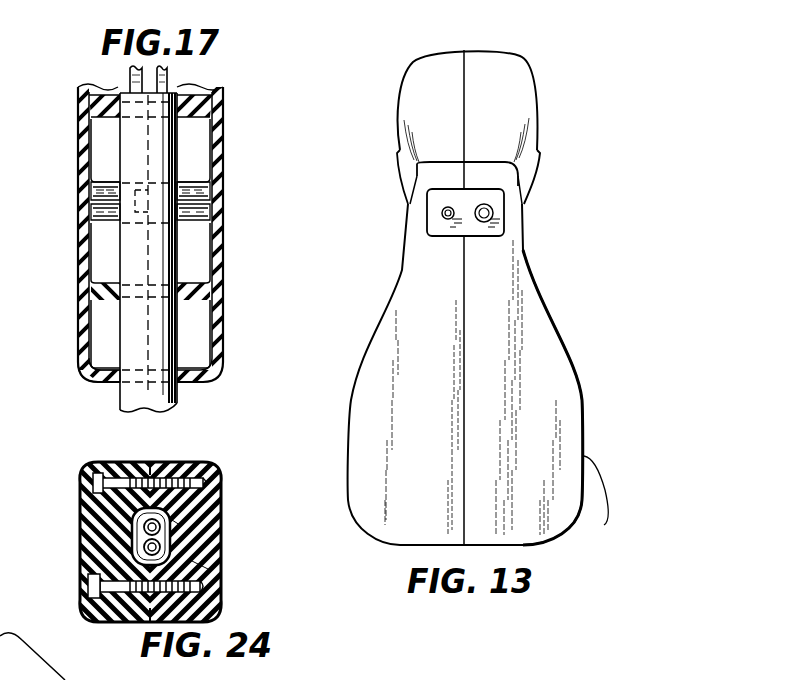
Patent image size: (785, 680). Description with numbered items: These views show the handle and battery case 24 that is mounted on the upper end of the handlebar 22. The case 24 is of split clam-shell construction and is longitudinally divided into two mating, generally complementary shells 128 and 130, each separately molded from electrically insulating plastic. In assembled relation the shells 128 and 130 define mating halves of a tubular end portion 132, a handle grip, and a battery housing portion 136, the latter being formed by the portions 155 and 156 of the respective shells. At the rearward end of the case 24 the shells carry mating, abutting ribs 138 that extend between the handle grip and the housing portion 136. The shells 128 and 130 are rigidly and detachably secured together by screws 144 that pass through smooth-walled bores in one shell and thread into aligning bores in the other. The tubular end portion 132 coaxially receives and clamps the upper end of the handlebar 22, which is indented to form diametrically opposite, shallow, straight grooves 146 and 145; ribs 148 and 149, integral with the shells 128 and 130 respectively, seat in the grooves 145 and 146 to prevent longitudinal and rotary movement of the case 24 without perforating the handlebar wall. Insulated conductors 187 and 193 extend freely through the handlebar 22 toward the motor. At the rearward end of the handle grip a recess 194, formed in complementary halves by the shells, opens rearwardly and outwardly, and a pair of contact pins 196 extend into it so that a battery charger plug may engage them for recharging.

In FIG. 17, the handlebar 22 is at (180, 398).
In FIG. 24, the handlebar 22 is at (172, 518).
In FIG. 17, the handle and battery case 24 is at (50, 170).
In FIG. 13, the handle and battery case 24 is at (510, 49).
In FIG. 17, the shell 128 is at (222, 313).
In FIG. 24, the shell 128 is at (218, 592).
In FIG. 13, the shell 128 is at (553, 300).
In FIG. 17, the shell 130 is at (78, 332).
In FIG. 24, the shell 130 is at (86, 606).
In FIG. 13, the shell 130 is at (400, 68).
In FIG. 17, the tubular end portion 132 is at (228, 104).
In FIG. 13, the battery housing portion 136 is at (347, 386).
In FIG. 13, the ribs 138 is at (411, 309).
In FIG. 24, the screws 144 is at (93, 484).
In FIG. 17, the groove 145 is at (198, 182).
In FIG. 24, the groove 145 is at (172, 544).
In FIG. 17, the groove 146 is at (98, 212).
In FIG. 24, the groove 146 is at (144, 538).
In FIG. 17, the rib 148 is at (200, 212).
In FIG. 24, the rib 148 is at (205, 574).
In FIG. 17, the rib 149 is at (98, 182).
In FIG. 24, the rib 149 is at (132, 526).
In FIG. 13, the portion 155 is at (594, 501).
In FIG. 13, the portion 156 is at (348, 452).
In FIG. 17, the conductor 187 is at (130, 75).
In FIG. 17, the conductor 193 is at (167, 78).
In FIG. 13, the recess 194 is at (427, 202).
In FIG. 13, the contact pins 196 is at (444, 218).